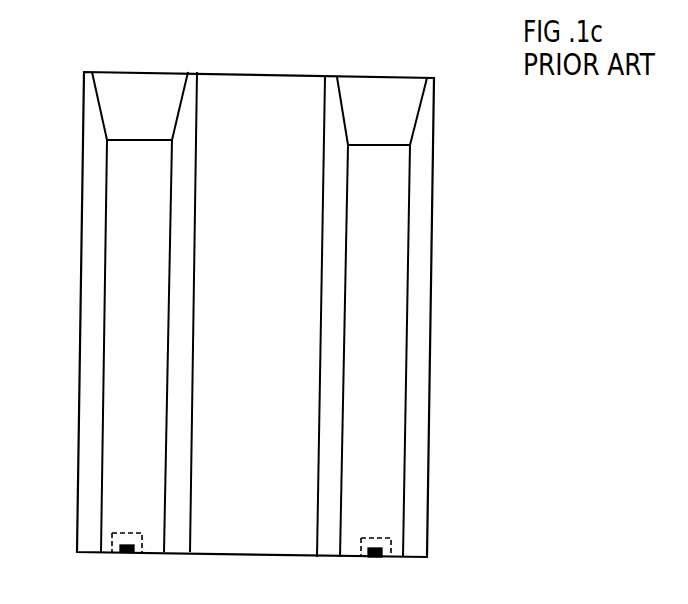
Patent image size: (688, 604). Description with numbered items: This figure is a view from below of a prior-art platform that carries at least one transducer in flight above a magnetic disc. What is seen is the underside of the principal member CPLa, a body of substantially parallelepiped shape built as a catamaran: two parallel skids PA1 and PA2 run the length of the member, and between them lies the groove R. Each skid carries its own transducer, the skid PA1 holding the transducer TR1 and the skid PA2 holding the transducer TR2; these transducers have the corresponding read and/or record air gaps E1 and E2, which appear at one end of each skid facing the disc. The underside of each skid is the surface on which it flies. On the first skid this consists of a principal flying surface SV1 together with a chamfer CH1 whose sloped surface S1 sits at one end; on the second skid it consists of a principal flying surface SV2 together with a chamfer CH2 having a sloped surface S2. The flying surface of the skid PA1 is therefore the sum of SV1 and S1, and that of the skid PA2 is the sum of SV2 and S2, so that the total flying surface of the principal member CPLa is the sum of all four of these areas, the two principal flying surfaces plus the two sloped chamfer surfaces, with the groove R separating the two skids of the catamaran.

The chamfer CH1 is at (113, 87).
The sloped surface S1 is at (164, 83).
The groove R is at (290, 88).
The chamfer CH2 is at (377, 92).
The sloped surface S2 is at (412, 93).
The skid PA1 is at (88, 207).
The skid PA2 is at (418, 213).
The principal flying surface SV1 is at (112, 274).
The principal flying surface SV2 is at (397, 277).
The transducer TR1 is at (122, 533).
The transducer TR2 is at (362, 538).
The read and/or record air gap E1 is at (126, 563).
The read and/or record air gap E2 is at (375, 571).
The principal member CPLa is at (207, 553).